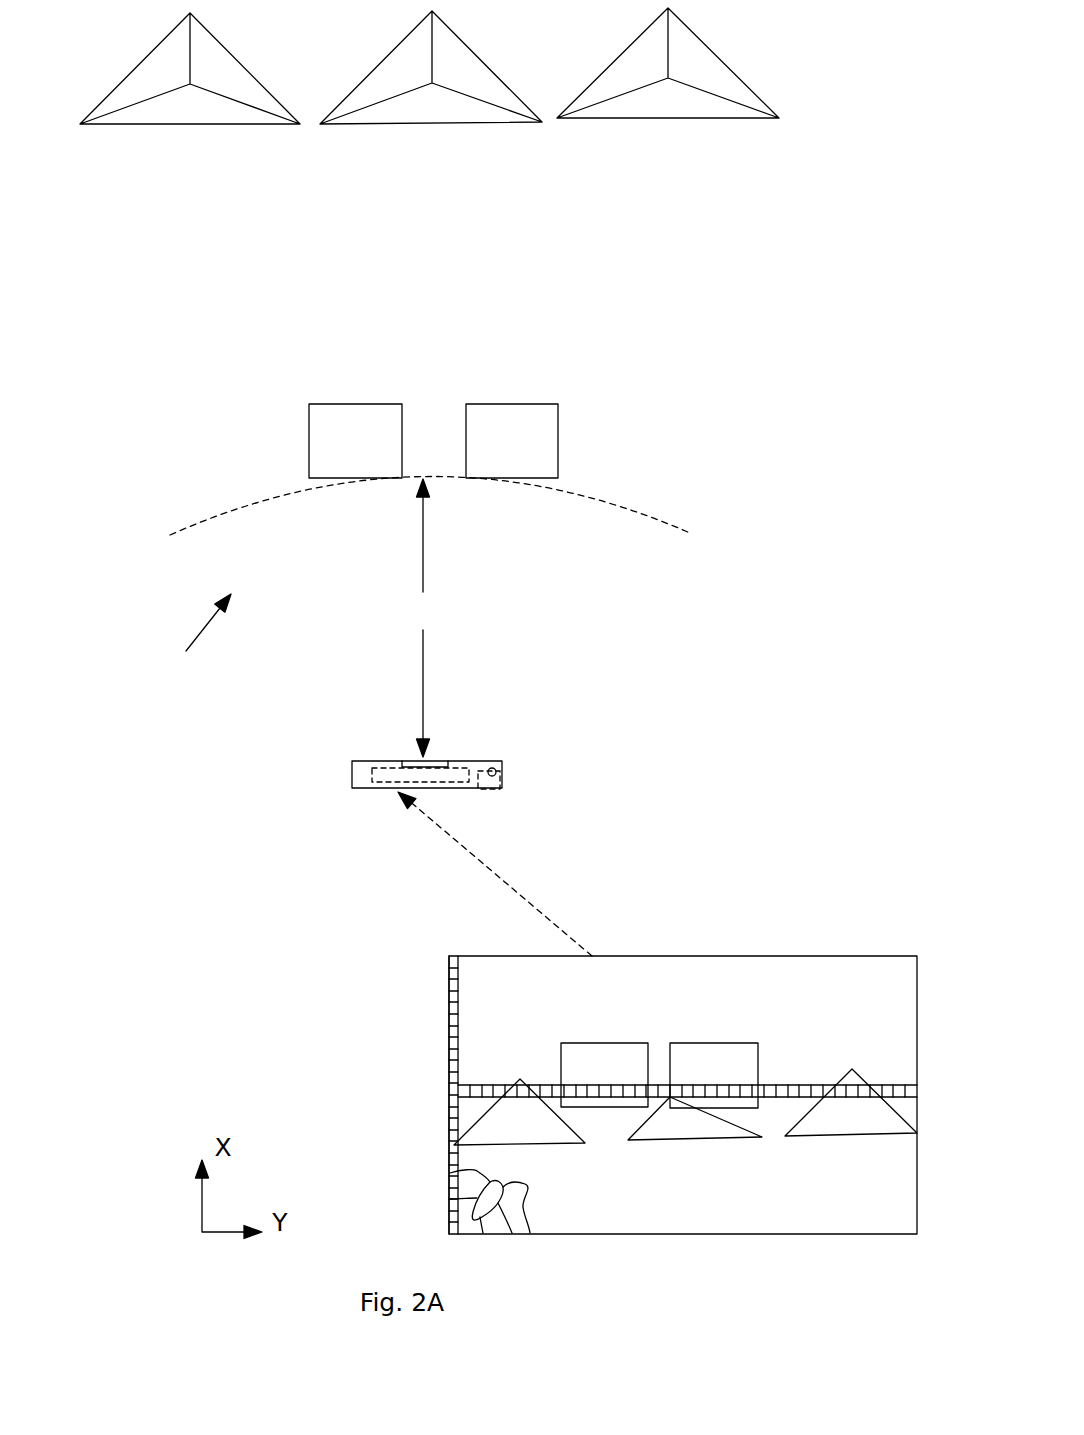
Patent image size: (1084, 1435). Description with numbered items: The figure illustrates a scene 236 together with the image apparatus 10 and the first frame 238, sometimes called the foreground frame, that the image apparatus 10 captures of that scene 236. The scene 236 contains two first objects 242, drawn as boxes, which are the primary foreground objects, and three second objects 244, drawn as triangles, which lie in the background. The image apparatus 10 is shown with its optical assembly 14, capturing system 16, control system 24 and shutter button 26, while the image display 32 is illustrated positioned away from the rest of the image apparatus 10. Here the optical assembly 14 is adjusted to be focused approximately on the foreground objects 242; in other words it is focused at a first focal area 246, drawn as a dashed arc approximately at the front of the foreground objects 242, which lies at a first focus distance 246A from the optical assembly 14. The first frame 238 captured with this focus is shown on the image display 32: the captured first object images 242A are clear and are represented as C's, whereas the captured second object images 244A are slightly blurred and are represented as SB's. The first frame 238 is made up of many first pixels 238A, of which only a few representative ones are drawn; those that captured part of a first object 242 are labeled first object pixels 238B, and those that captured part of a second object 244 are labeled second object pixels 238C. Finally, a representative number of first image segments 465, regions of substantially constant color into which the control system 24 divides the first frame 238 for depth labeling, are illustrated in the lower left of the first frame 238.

The image apparatus 10 is at (335, 759).
The optical assembly 14 is at (435, 763).
The capturing system 16 is at (442, 776).
The control system 24 is at (500, 782).
The shutter button 26 is at (495, 772).
The image display 32 is at (442, 981).
The scene 236 is at (194, 641).
The first frame 238 is at (530, 974).
The first pixels 238A is at (457, 1025).
The first object pixels 238B is at (618, 1090).
The second object pixels 238C is at (848, 1090).
The first objects 242 is at (333, 460).
The first object images 242A is at (697, 1047).
The second objects 244 is at (187, 114).
The second object images 244A is at (853, 1077).
The first focal area 246 is at (690, 531).
The first focus distance 246A is at (426, 618).
The first image segments 465 is at (467, 1182).